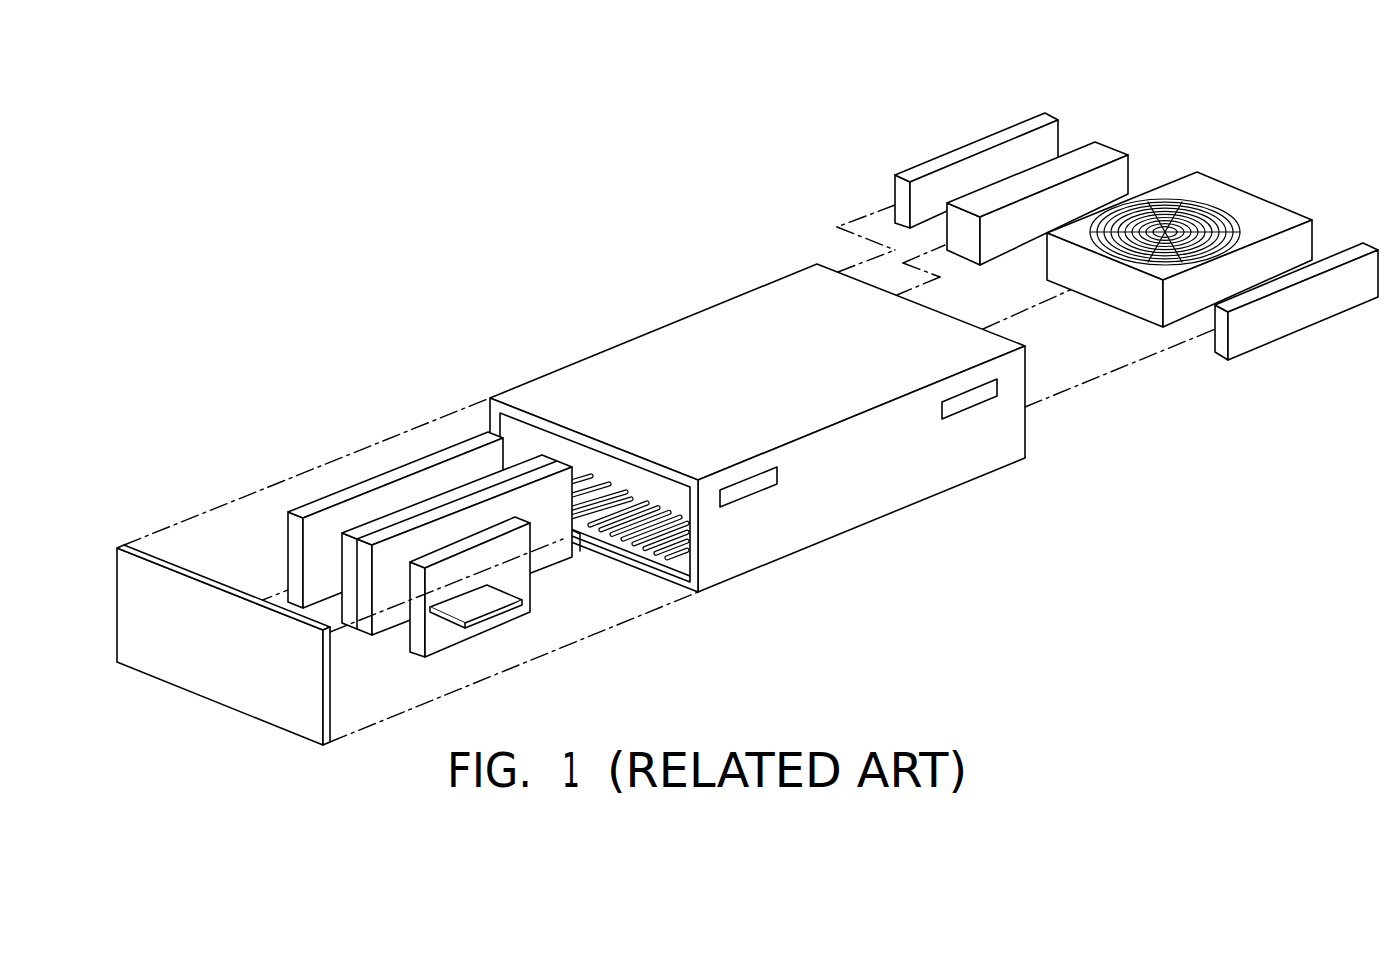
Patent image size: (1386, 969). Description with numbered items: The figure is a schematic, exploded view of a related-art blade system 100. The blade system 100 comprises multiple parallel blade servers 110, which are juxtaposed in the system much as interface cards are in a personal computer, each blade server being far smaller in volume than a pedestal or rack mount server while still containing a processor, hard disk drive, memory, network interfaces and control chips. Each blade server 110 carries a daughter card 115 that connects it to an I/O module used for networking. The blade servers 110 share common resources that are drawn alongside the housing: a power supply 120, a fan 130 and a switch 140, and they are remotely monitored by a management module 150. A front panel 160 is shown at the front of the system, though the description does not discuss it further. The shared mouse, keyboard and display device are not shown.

The blade system 100 is at (157, 127).
The blade servers 110 is at (463, 563).
The daughter card 115 is at (485, 607).
The power supply 120 is at (1108, 170).
The fan 130 is at (1290, 233).
The switch 140 is at (1365, 268).
The management module 150 is at (938, 180).
The front panel 160 is at (127, 558).